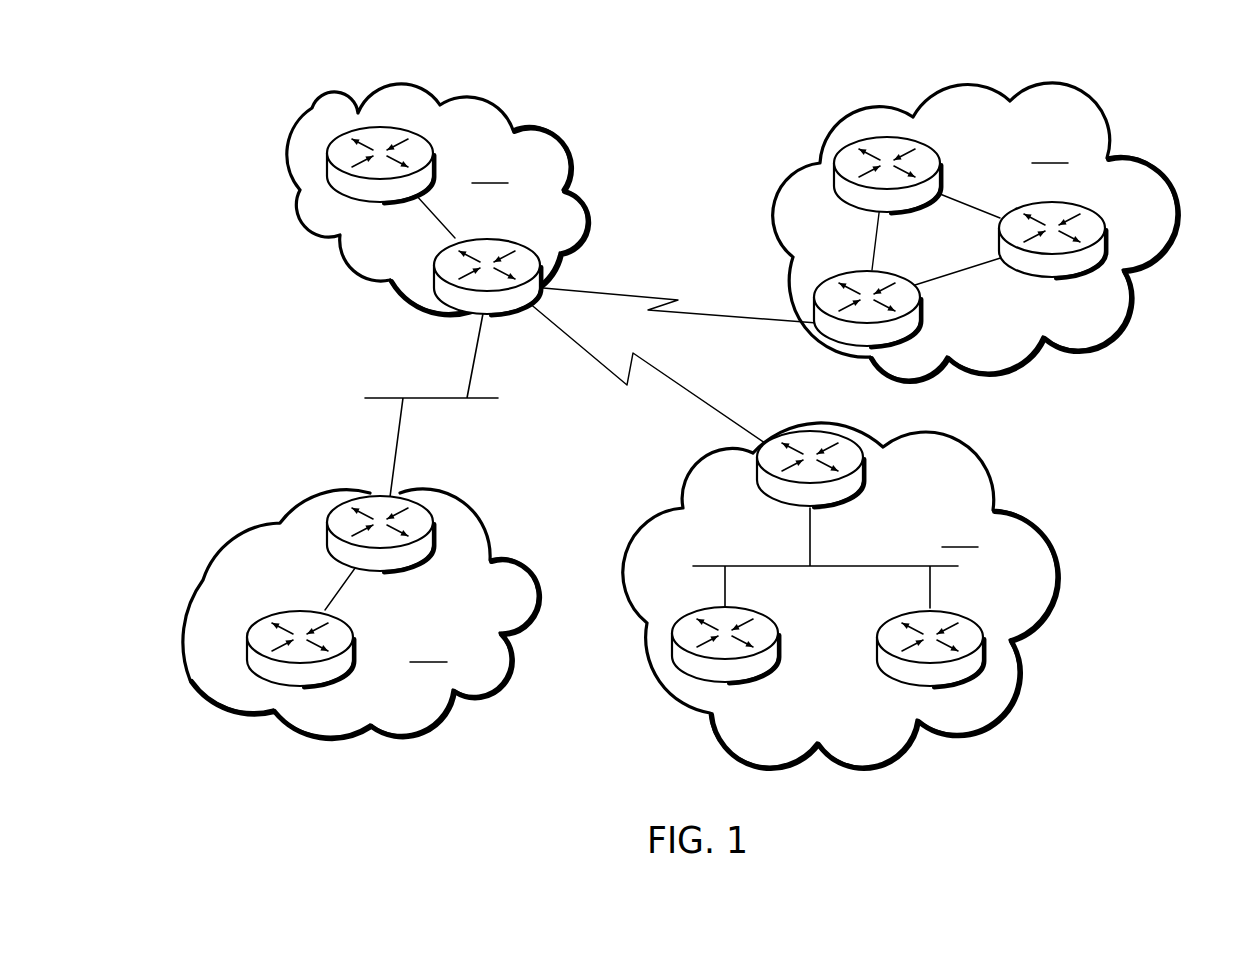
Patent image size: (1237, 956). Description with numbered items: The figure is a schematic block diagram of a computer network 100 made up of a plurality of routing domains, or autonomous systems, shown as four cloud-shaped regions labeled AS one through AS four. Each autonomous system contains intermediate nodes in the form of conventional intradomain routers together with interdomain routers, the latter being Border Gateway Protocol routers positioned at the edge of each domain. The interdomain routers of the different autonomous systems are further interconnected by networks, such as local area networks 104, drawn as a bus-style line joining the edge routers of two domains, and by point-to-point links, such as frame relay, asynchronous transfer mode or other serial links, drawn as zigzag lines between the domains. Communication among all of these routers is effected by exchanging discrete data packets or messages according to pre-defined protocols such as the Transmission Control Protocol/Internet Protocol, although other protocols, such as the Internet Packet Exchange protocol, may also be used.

The computer network 100 is at (703, 426).
The local area networks 104 is at (483, 400).